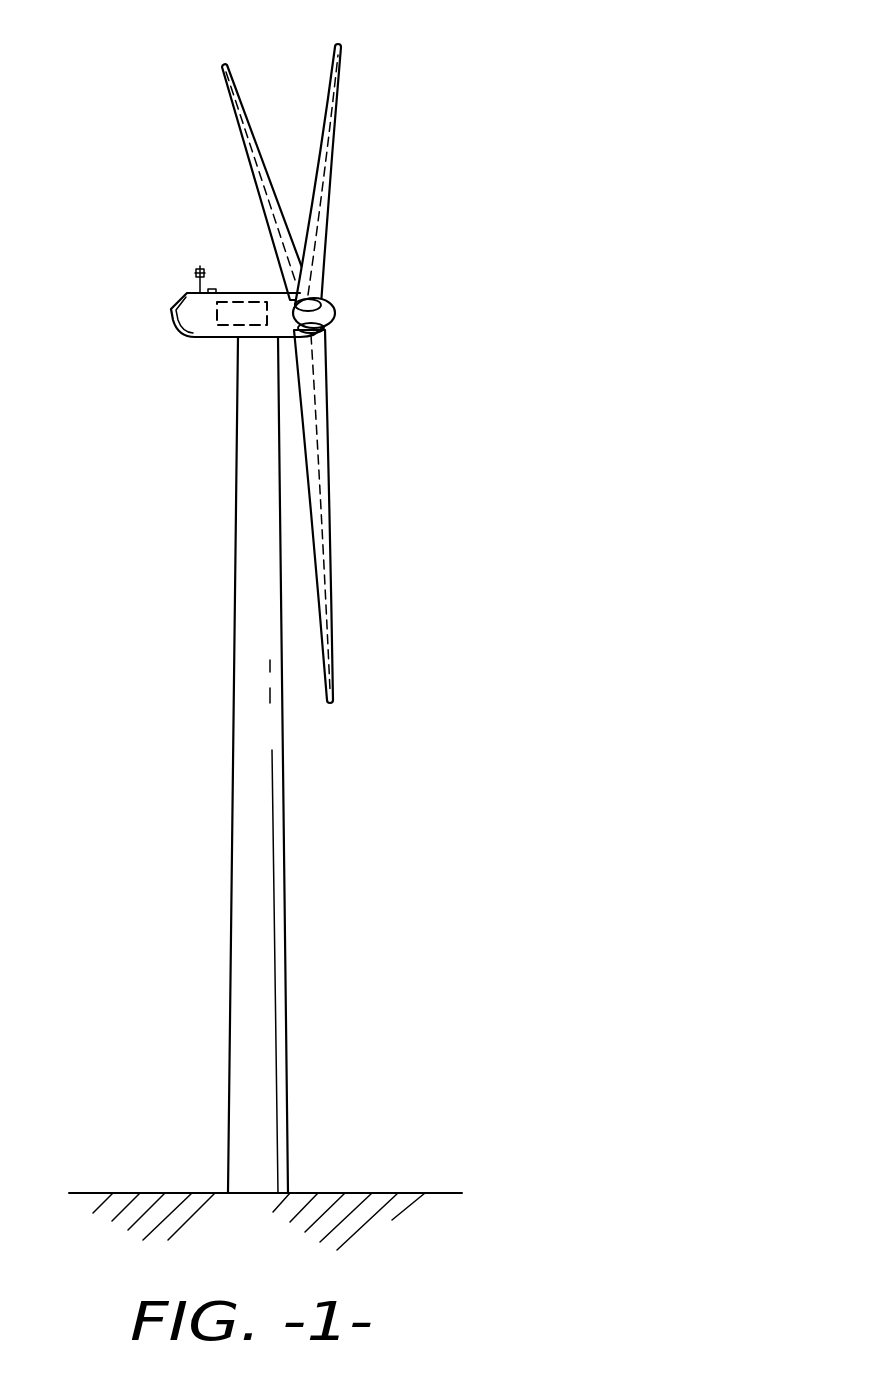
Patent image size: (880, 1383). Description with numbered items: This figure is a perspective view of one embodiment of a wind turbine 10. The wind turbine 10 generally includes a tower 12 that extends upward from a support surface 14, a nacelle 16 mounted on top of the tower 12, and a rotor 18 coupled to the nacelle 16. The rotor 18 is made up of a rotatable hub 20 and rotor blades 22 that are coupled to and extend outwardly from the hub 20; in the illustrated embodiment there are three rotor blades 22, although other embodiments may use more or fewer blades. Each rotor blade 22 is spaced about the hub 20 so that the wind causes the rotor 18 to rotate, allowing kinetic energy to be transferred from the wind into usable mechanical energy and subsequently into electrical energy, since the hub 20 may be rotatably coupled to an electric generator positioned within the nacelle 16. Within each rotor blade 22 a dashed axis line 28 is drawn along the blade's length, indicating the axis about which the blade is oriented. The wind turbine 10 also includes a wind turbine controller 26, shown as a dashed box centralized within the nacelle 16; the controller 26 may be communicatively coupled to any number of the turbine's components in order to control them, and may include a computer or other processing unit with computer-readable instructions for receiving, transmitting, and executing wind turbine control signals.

The wind turbine 10 is at (460, 127).
The tower 12 is at (245, 882).
The support surface 14 is at (153, 1192).
The nacelle 16 is at (217, 340).
The rotor 18 is at (340, 287).
The rotatable hub 20 is at (334, 320).
The rotor blade 22 is at (326, 88).
The wind turbine controller 26 is at (247, 302).
The pitch axis 28 is at (270, 217).